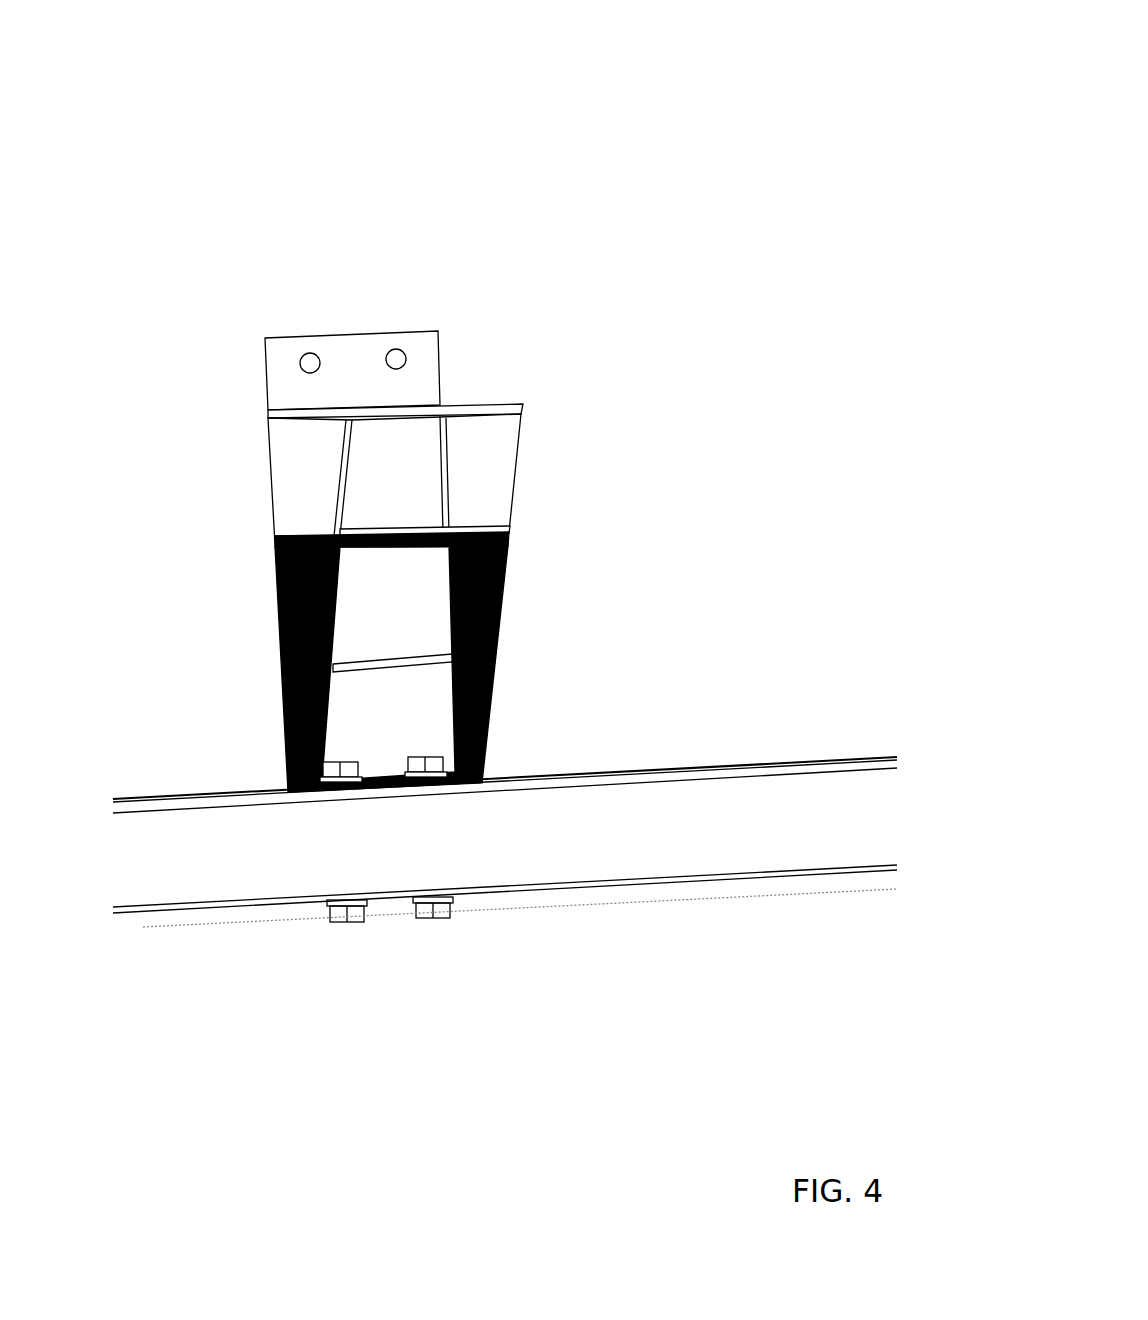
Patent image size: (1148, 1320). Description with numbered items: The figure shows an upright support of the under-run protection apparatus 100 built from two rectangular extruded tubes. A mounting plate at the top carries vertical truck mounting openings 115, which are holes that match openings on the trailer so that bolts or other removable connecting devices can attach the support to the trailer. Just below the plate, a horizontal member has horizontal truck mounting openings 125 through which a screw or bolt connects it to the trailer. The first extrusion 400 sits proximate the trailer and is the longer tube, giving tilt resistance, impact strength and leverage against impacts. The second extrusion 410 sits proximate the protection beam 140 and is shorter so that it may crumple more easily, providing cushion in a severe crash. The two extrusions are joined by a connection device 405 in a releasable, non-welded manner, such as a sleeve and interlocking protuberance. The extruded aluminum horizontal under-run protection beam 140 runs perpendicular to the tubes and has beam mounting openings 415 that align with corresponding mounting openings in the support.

The apparatus 100 is at (470, 260).
The vertical truck mounting openings 115 is at (395, 360).
The horizontal truck mounting openings 125 is at (352, 405).
The first extrusion 400 is at (505, 474).
The connection device 405 is at (503, 540).
The second extrusion 410 is at (503, 613).
The beam mounting openings 415 is at (360, 790).
The horizontal under-run protection beam 140 is at (630, 843).